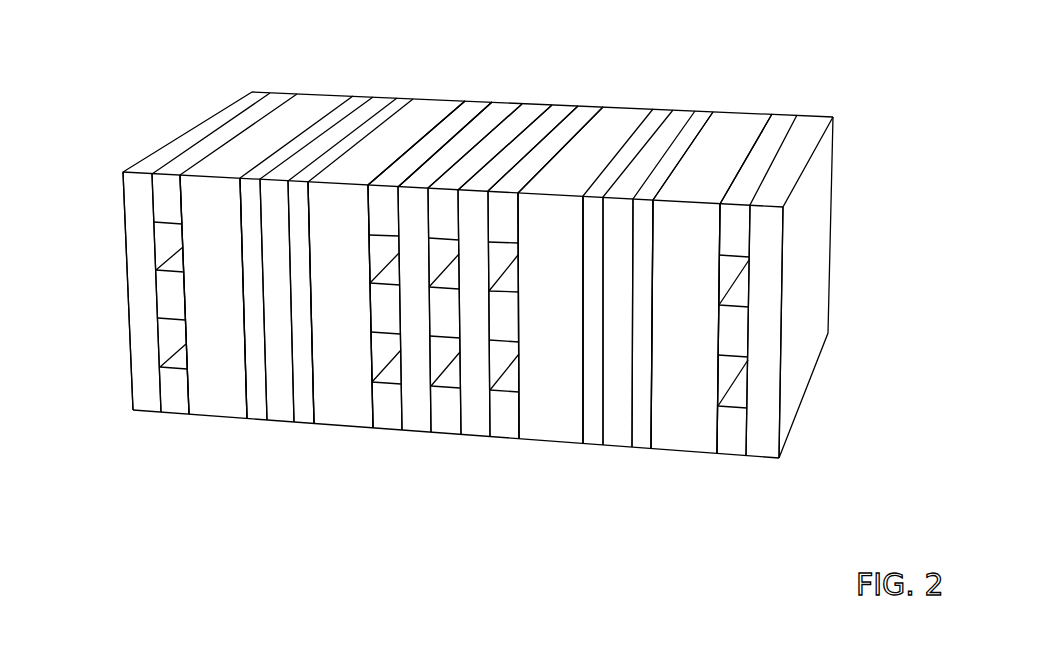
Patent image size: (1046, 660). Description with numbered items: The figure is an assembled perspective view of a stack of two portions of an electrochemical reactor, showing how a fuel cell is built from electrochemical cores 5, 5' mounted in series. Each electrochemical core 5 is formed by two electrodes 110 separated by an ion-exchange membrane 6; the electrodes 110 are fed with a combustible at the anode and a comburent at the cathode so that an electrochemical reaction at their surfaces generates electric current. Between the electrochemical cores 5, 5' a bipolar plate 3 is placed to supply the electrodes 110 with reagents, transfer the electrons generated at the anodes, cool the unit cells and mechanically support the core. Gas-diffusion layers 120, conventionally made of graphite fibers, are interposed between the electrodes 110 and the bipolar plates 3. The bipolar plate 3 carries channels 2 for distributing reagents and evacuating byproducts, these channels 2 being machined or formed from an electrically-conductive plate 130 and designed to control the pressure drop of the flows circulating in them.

The channels 2 is at (740, 385).
The bipolar plate 3 is at (602, 100).
The electrochemical core 5 is at (289, 46).
The electrochemical core 5' is at (806, 46).
The ion-exchange membrane 6 is at (687, 116).
The electrodes 110 is at (637, 493).
The gas-diffusion layers 120 is at (725, 493).
The electrically-conductive plate 130 is at (803, 497).